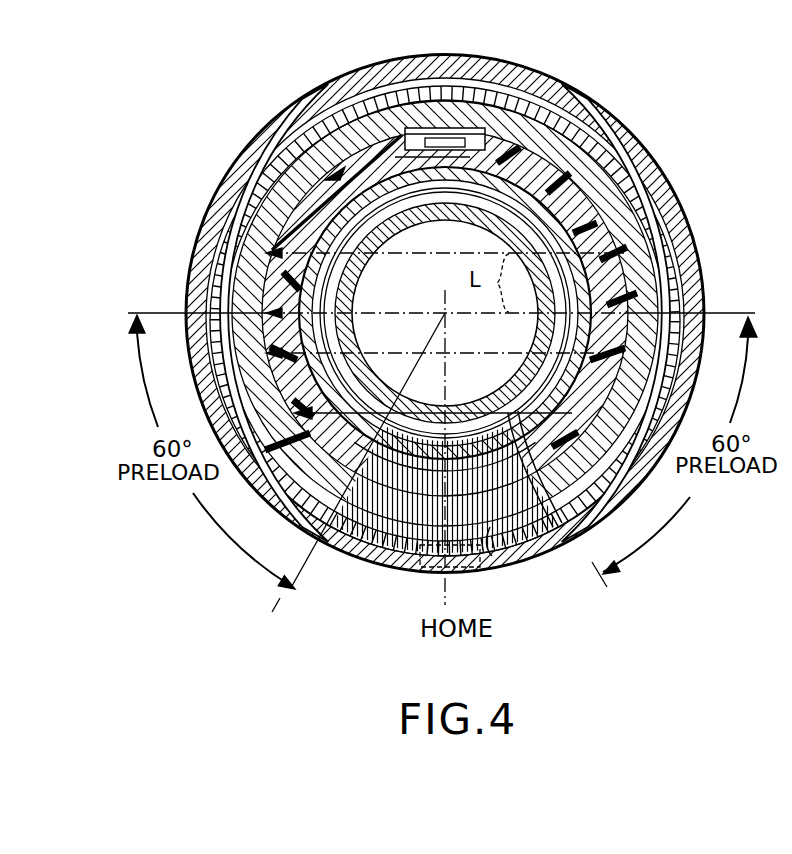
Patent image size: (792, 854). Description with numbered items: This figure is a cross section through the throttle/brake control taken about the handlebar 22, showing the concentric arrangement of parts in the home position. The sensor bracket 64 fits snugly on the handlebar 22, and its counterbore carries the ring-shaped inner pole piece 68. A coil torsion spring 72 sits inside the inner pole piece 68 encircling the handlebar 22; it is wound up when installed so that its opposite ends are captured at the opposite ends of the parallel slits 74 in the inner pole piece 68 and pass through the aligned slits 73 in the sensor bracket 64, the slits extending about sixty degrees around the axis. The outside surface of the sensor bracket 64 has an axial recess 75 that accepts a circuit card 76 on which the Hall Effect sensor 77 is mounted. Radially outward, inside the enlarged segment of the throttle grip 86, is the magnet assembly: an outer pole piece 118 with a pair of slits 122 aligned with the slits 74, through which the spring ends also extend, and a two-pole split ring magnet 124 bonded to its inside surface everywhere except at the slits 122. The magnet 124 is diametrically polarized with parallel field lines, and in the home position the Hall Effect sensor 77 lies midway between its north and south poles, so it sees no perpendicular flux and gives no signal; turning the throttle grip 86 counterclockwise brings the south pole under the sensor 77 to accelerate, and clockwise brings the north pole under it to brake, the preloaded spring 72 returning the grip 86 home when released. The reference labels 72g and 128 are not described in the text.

The handlebar 22 is at (427, 212).
The sensor bracket 64 is at (353, 273).
The inner pole piece 68 is at (358, 359).
The coil torsion spring 72 is at (488, 366).
The spring arm 72g is at (582, 530).
The slits 73 is at (363, 463).
The slits 74 is at (414, 370).
The axial recess 75 is at (420, 128).
The circuit card 76 is at (467, 130).
The Hall Effect sensor 77 is at (448, 138).
The throttle grip 86 is at (445, 324).
The outer pole piece 118 is at (258, 180).
The slits 122 is at (492, 556).
The two-pole split ring magnet 124 is at (253, 244).
The home indicator 128 is at (426, 575).